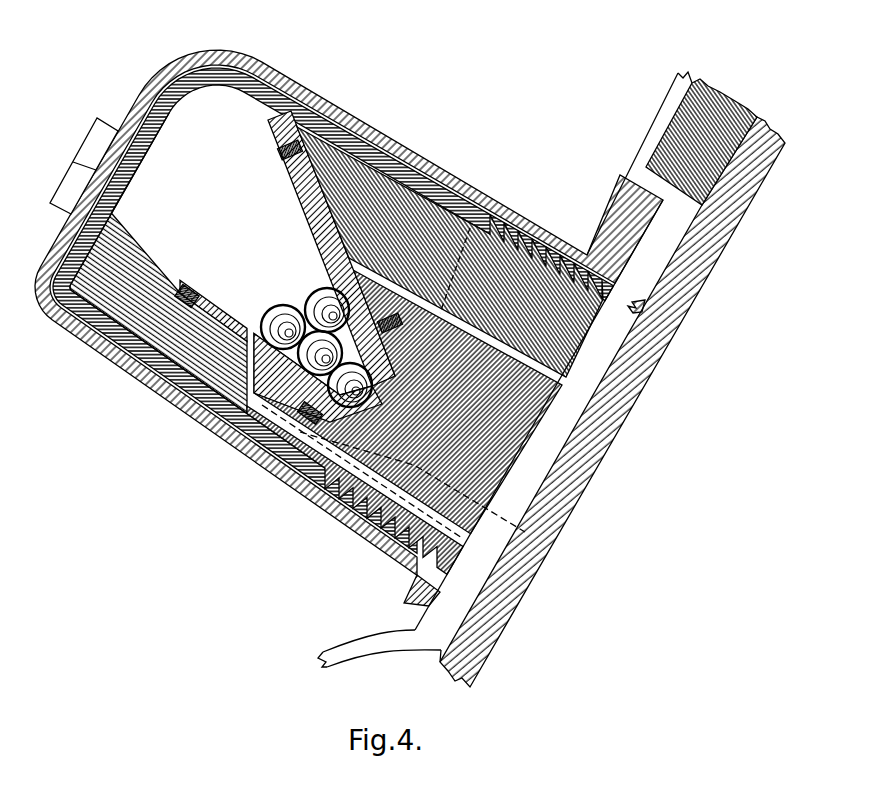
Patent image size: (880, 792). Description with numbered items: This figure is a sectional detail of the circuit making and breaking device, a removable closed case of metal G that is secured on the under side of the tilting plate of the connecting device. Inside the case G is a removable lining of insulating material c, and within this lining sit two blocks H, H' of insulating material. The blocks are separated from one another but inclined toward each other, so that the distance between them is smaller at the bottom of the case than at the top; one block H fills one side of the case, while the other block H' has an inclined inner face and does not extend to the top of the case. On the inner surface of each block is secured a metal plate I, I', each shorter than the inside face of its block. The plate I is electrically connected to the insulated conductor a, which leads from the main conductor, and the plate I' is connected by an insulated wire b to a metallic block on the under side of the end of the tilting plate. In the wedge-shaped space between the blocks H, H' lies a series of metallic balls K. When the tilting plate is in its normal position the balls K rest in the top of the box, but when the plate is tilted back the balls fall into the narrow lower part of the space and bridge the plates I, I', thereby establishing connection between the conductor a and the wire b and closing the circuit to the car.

The closed case G is at (349, 300).
The lining of insulating material c is at (333, 310).
The insulated wire b is at (553, 351).
The block H is at (158, 263).
The block H' is at (324, 282).
The plate I is at (211, 306).
The plate I' is at (331, 248).
The metallic balls K is at (316, 340).
The insulated conductor a is at (379, 652).